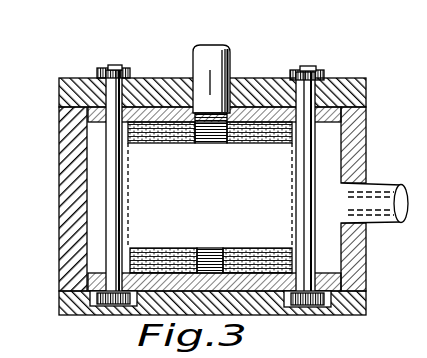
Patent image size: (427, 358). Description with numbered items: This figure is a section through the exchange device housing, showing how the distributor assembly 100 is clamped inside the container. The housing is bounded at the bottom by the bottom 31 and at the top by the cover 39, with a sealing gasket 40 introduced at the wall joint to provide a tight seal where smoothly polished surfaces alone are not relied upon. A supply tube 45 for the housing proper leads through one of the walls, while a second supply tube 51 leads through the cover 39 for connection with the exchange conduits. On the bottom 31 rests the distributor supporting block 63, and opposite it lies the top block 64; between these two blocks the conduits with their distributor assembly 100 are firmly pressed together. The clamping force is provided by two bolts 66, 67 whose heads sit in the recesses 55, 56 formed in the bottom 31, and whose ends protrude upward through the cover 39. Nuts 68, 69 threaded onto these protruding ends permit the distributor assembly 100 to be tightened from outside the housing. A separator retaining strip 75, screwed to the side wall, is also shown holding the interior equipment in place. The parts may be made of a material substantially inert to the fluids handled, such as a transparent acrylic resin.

The sealing gasket 40 is at (60, 107).
The separator retaining strip 75 is at (100, 230).
The cover 39 is at (366, 99).
The bottom 31 is at (358, 307).
The top block 64 is at (339, 116).
The distributor supporting block 63 is at (332, 271).
The distributor assembly 100 is at (267, 147).
The supply tube 51 is at (231, 60).
The bolt 66 is at (115, 194).
The bolt 67 is at (308, 100).
The nut 68 is at (127, 78).
The nut 69 is at (289, 70).
The recess 55 is at (98, 311).
The recess 56 is at (327, 311).
The supply tube 45 is at (391, 165).